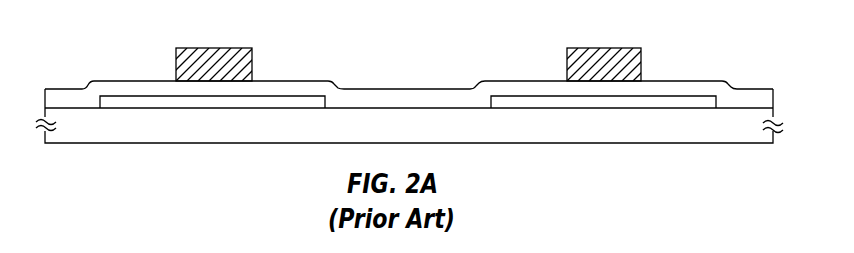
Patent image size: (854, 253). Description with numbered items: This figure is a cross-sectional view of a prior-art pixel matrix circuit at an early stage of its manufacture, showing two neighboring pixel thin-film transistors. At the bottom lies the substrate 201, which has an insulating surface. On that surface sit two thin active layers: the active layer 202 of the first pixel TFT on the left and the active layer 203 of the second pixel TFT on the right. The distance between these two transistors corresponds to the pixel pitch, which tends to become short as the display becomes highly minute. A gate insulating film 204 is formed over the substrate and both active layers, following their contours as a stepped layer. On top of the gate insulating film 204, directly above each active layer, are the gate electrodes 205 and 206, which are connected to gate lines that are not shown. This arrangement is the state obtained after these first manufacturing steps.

The substrate 201 is at (736, 137).
The active layer of a first pixel TFT 202 is at (265, 102).
The active layer of a second pixel TFT 203 is at (658, 105).
The gate insulating film 204 is at (387, 98).
The gate electrode 205 is at (190, 48).
The gate electrode 206 is at (583, 48).